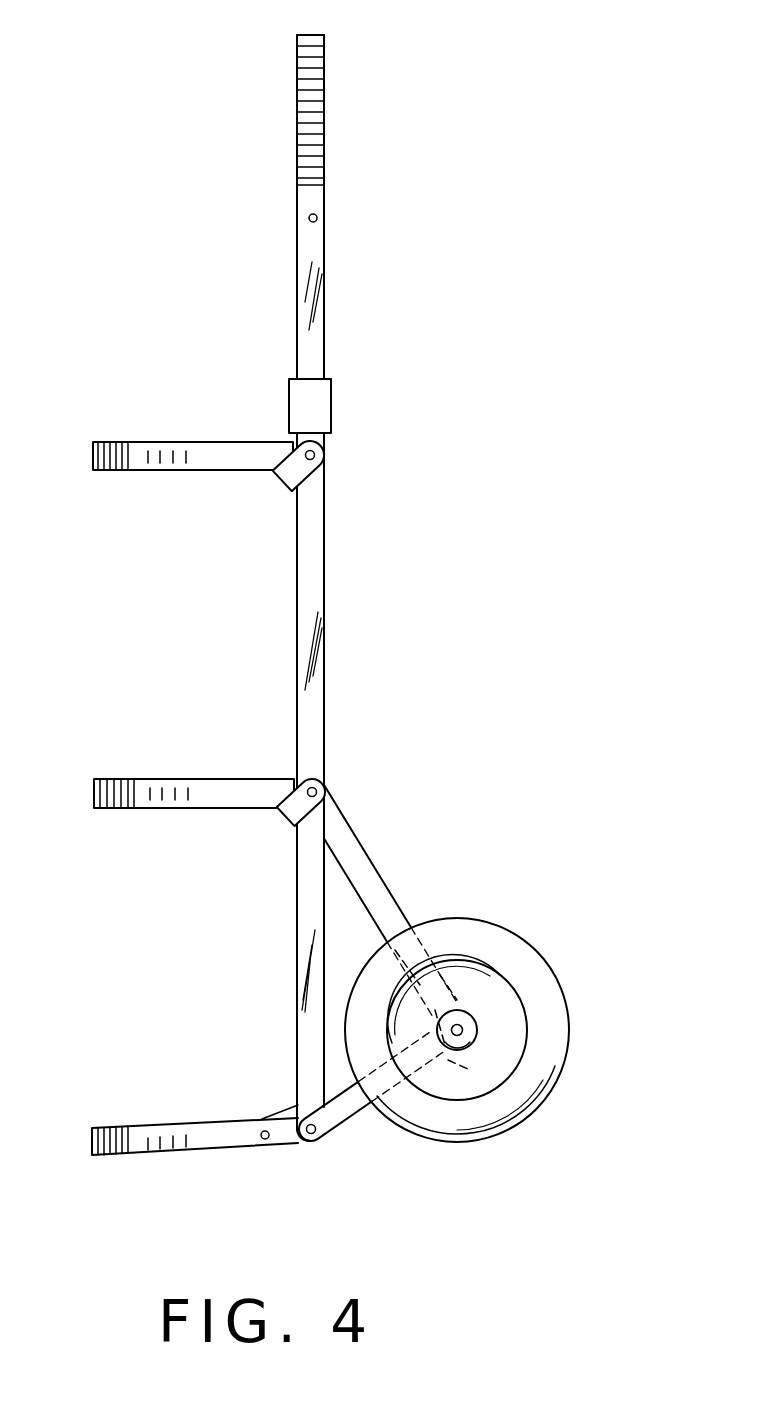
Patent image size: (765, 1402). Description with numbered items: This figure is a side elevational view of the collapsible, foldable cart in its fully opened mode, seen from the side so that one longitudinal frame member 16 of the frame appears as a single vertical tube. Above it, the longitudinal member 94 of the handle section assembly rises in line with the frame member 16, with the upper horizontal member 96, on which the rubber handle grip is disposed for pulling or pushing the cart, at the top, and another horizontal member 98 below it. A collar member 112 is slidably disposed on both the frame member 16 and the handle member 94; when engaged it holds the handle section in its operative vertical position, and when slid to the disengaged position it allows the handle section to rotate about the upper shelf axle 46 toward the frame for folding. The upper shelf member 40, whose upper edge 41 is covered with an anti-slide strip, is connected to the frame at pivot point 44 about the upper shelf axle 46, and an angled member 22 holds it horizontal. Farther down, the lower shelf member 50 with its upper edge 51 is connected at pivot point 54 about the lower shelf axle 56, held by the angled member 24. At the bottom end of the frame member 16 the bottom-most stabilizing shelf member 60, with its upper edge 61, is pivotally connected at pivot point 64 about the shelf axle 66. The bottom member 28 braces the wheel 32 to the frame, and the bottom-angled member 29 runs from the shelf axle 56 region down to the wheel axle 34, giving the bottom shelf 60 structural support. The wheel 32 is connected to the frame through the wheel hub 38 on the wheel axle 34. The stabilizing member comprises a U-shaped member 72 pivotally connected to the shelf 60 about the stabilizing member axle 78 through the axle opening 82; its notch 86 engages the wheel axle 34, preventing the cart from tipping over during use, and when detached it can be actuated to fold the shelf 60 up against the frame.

The second longitudinal frame member 16 is at (305, 607).
The angled member 22 is at (315, 481).
The angled member 24 is at (291, 792).
The bottom member 28 is at (340, 840).
The bottom-angled member 29 is at (354, 1113).
The wheel 32 is at (448, 927).
The wheel axle 34 is at (462, 1026).
The wheel hub 38 is at (480, 977).
The upper shelf member 40 is at (193, 454).
The upper edge 41 is at (215, 470).
The pivot point 44 is at (328, 466).
The upper shelf axle 46 is at (330, 441).
The lower shelf member 50 is at (179, 794).
The upper edge 51 is at (160, 815).
The pivot point 54 is at (322, 790).
The lower shelf axle 56 is at (298, 790).
The bottom-most stabilizing shelf member 60 is at (169, 1119).
The upper edge 61 is at (155, 1125).
The pivot point 64 is at (318, 1135).
The shelf axle 66 is at (309, 1136).
The U-shaped member 72 is at (335, 1082).
The stabilizing member axle 78 is at (265, 1140).
The axle opening 82 is at (265, 1120).
The notch 86 is at (472, 1032).
The longitudinal member 94 is at (318, 272).
The upper horizontal member 96 is at (315, 36).
The horizontal member 98 is at (317, 215).
The collar member 112 is at (315, 405).